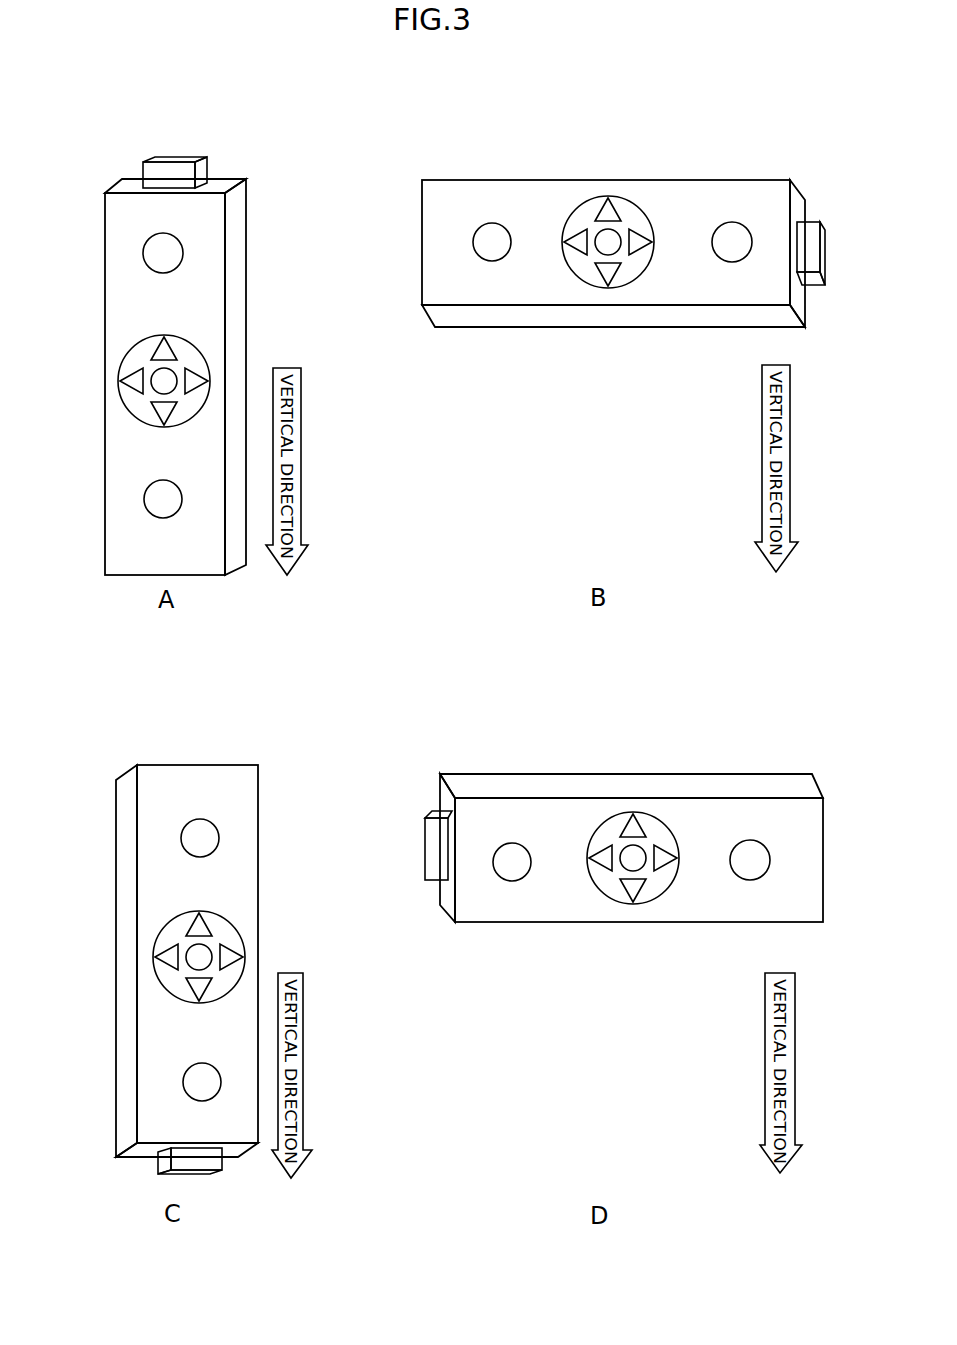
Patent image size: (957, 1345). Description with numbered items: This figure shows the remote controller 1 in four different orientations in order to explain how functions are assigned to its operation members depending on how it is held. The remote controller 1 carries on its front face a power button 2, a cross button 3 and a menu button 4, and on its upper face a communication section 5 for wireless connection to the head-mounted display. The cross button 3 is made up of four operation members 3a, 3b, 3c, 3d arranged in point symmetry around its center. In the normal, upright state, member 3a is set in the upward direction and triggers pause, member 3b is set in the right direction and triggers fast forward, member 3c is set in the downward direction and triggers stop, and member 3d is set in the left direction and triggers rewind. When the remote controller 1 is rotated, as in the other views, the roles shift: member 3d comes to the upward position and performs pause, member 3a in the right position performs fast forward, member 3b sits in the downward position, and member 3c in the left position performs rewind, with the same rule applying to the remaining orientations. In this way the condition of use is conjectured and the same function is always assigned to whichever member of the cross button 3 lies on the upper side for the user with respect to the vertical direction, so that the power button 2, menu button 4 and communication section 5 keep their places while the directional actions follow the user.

The remote controller 1 is at (281, 128).
The power button 2 is at (183, 246).
The cross button 3 is at (405, 602).
The member 3a is at (165, 346).
The member 3b is at (191, 395).
The member 3c is at (172, 418).
The member 3d is at (137, 394).
The menu button 4 is at (183, 493).
The communication section 5 is at (202, 164).